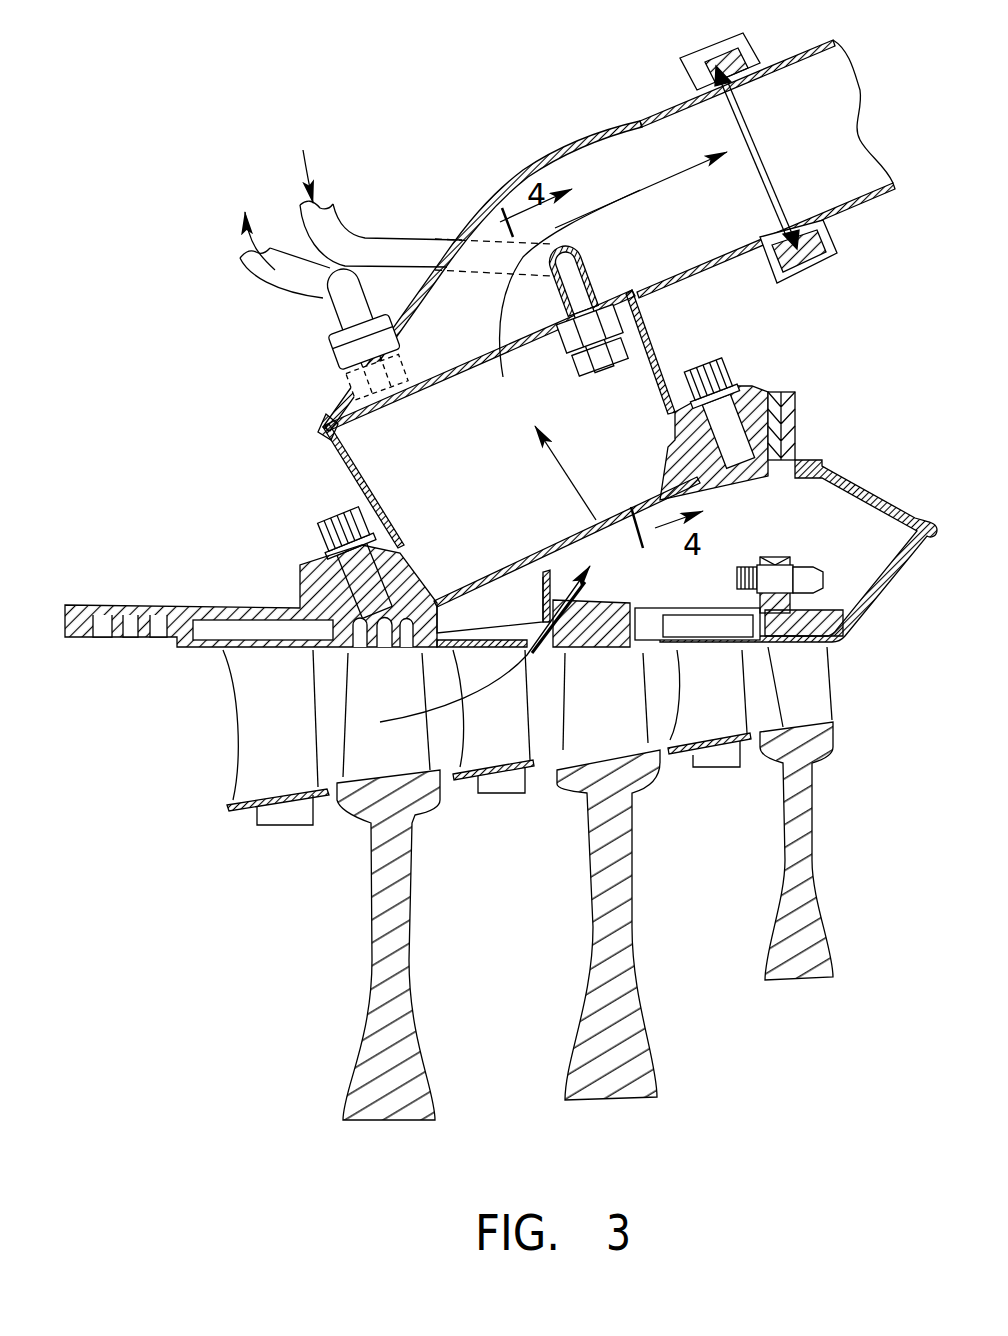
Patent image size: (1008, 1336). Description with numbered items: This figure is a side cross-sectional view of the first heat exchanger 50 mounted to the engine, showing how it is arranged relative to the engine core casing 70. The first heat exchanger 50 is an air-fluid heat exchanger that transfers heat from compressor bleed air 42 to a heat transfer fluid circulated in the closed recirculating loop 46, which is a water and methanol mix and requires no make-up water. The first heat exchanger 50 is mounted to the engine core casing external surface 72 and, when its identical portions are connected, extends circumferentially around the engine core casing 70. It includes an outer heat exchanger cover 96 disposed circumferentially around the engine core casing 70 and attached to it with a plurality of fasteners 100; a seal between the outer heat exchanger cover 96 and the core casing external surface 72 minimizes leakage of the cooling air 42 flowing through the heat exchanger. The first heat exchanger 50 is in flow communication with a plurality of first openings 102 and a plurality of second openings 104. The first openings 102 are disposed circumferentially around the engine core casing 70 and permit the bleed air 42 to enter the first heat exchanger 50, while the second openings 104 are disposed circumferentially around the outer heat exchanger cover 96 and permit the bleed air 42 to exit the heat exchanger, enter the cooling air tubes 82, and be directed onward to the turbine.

The compressor bleed air 42 is at (530, 648).
The recirculating loop 46 is at (328, 212).
The first heat exchanger 50 is at (330, 455).
The engine core casing 70 is at (127, 603).
The engine core casing external surface 72 is at (760, 413).
The cooling air tubes 82 is at (862, 208).
The outer heat exchanger cover 96 is at (320, 427).
The fasteners 100 is at (700, 362).
The first openings 102 is at (603, 540).
The second openings 104 is at (490, 347).